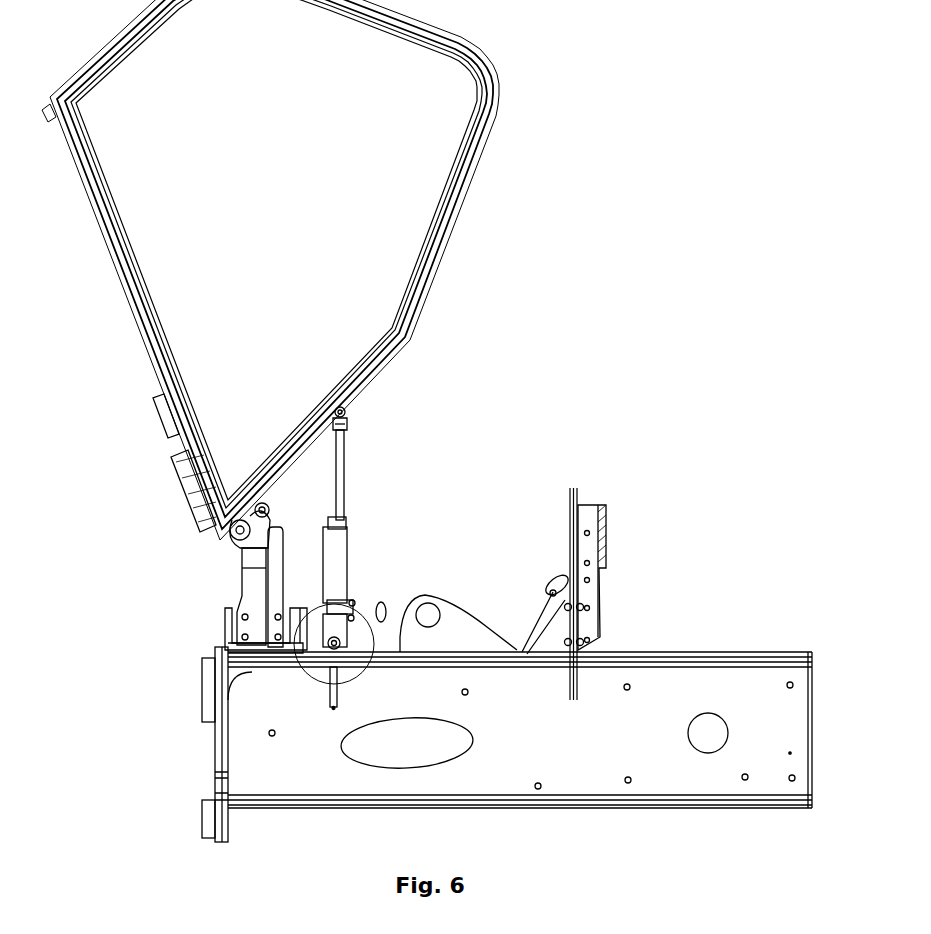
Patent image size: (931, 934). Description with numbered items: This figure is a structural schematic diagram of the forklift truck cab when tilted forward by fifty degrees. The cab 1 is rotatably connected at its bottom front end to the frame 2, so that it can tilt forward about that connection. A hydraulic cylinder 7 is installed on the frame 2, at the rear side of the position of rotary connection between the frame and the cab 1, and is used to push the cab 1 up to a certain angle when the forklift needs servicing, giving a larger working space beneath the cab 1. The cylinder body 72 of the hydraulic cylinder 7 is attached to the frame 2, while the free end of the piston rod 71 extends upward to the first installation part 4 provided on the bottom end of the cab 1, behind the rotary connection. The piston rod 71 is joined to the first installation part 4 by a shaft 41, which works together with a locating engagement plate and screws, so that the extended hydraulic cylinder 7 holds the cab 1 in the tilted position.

The cab 1 is at (440, 240).
The frame 2 is at (665, 658).
The first installation part 4 is at (349, 410).
The shaft 41 is at (348, 420).
The hydraulic cylinder 7 is at (393, 547).
The piston rod 71 is at (344, 483).
The cylinder body 72 is at (340, 547).